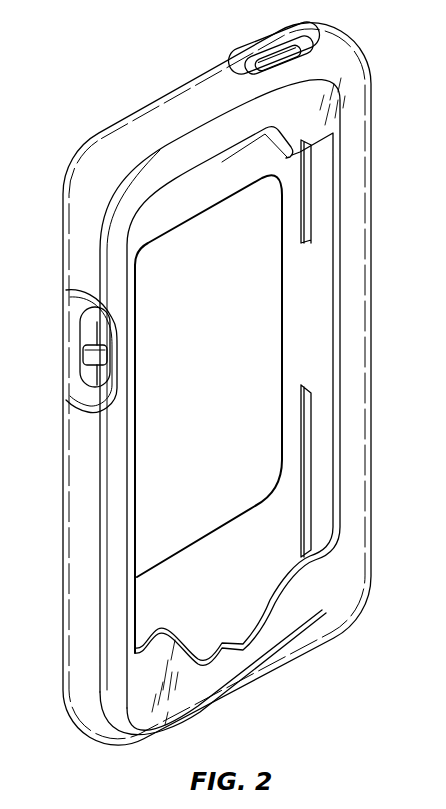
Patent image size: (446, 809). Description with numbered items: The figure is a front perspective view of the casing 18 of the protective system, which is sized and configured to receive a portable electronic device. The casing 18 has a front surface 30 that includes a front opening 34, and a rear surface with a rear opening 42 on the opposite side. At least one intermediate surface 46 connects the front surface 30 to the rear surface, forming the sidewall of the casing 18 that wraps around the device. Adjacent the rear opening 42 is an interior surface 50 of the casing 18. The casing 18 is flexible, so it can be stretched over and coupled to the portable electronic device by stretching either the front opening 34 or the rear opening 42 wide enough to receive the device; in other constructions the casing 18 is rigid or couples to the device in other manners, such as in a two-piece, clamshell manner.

The casing 18 is at (70, 134).
The front surface 30 is at (355, 117).
The front opening 34 is at (290, 190).
The rear opening 42 is at (163, 440).
The intermediate surface 46 is at (190, 107).
The interior surface 50 is at (243, 530).